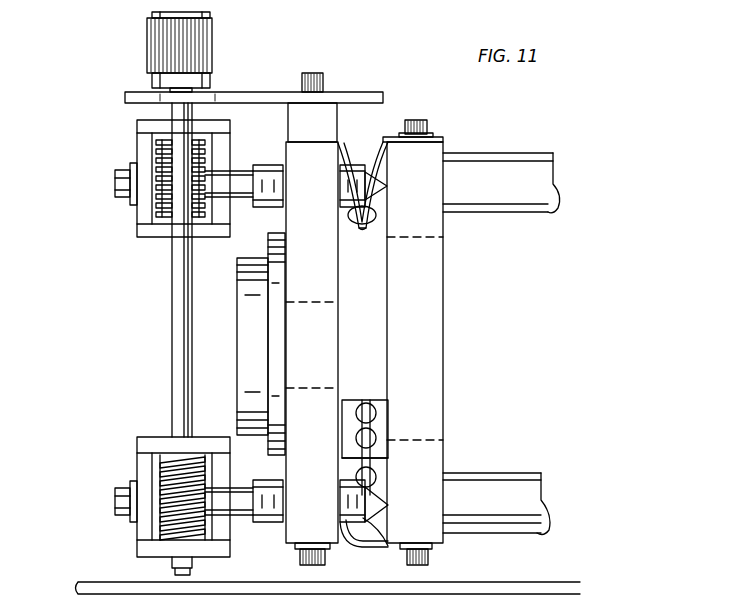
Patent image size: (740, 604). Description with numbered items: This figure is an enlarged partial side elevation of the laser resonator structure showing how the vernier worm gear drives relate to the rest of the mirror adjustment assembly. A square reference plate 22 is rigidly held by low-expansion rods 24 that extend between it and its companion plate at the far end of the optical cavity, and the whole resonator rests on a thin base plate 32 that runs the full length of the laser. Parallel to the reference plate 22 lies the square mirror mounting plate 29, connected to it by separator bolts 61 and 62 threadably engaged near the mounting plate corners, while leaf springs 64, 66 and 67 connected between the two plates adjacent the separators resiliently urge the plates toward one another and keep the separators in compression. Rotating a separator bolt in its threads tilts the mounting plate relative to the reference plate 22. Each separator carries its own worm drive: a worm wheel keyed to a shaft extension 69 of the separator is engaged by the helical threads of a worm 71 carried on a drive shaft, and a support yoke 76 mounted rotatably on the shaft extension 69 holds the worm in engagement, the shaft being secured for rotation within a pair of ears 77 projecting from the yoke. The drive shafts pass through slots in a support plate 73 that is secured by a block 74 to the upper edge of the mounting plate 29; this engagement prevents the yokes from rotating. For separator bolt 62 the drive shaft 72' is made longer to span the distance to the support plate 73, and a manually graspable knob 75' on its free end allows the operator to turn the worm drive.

The knob 75' is at (206, 52).
The support plate 73 is at (332, 100).
The block 74 is at (373, 143).
The leaf spring 64 is at (386, 138).
The rods 24 is at (488, 160).
The reference plate 22 is at (438, 273).
The mounting plate 29 is at (328, 315).
The leaf spring 67 is at (382, 434).
The leaf spring 66 is at (378, 551).
The base plate 32 is at (473, 587).
The separator bolt 62 is at (275, 522).
The separator bolt 61 is at (262, 175).
The ears 77 is at (140, 127).
The support yoke 76 is at (142, 212).
The worm 71 is at (160, 165).
The shaft extension 69 is at (115, 188).
The drive shaft 72' is at (158, 339).